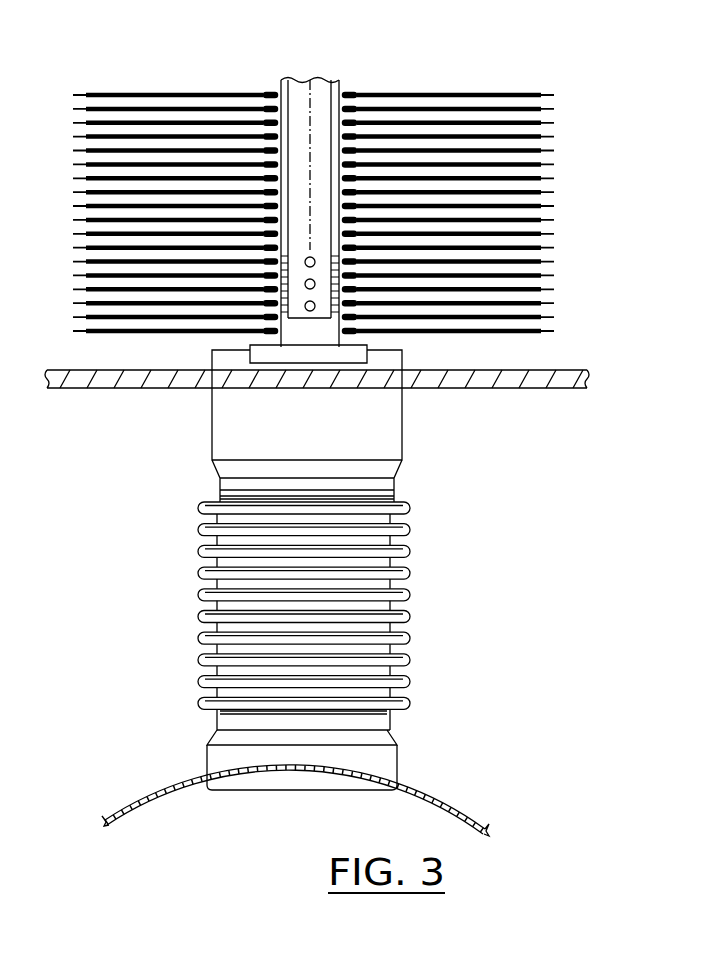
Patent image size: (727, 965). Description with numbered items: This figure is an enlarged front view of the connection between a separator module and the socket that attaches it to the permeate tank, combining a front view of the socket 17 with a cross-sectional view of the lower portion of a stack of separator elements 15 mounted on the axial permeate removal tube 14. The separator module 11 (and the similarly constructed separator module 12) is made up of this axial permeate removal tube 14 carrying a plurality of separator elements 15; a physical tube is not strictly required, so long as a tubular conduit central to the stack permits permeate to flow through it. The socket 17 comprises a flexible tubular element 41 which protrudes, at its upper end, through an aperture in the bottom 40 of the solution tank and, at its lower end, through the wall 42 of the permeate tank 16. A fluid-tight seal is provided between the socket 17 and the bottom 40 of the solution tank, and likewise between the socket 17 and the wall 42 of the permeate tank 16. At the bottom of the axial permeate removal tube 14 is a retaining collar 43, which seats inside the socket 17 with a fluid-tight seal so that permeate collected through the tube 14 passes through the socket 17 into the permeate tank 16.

The separator module 11 is at (382, 183).
The separator module 12 is at (382, 183).
The axial permeate removal tube 14 is at (340, 80).
The separator elements 15 is at (554, 193).
The permeate tank 16 is at (432, 782).
The socket 17 is at (402, 452).
The bottom of the solution tank 40 is at (548, 378).
The flexible tubular element 41 is at (378, 611).
The wall of the permeate tank 42 is at (311, 795).
The retaining collar 43 is at (355, 362).